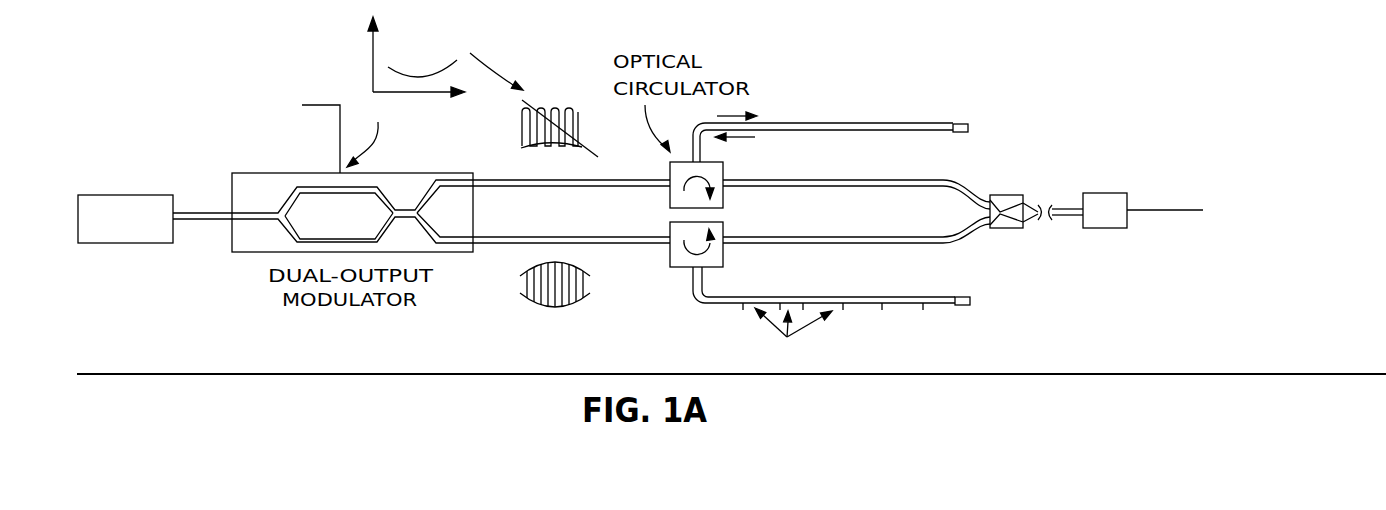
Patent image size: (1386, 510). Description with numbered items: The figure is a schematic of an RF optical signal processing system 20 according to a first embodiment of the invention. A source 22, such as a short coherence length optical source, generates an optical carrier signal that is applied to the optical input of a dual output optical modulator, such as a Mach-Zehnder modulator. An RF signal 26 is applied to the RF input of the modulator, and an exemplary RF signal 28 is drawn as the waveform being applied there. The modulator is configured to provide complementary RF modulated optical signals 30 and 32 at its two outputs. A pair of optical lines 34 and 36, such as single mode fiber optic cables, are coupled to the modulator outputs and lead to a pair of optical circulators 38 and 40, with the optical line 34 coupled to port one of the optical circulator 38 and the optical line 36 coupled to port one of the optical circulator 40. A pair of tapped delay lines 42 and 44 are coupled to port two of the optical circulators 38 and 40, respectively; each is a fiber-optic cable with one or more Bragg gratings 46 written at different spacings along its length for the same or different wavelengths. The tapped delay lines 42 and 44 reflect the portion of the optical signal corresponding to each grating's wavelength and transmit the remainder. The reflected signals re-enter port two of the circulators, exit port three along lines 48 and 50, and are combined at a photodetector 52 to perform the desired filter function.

The RF optical signal processing system 20 is at (1336, 170).
The source 22 is at (102, 195).
The RF signal 26 is at (303, 105).
The exemplary RF signal 28 is at (419, 62).
The complementary RF modulated optical signal 30 is at (547, 110).
The complementary RF modulated optical signal 32 is at (562, 308).
The optical line 34 is at (637, 180).
The optical line 36 is at (597, 243).
The optical circulator 38 is at (728, 158).
The optical circulator 40 is at (723, 264).
The tapped delay line 42 is at (887, 123).
The tapped delay line 44 is at (943, 296).
The Bragg gratings 46 is at (767, 337).
The line 48 is at (912, 182).
The line 50 is at (912, 245).
The photodetector 52 is at (1116, 178).